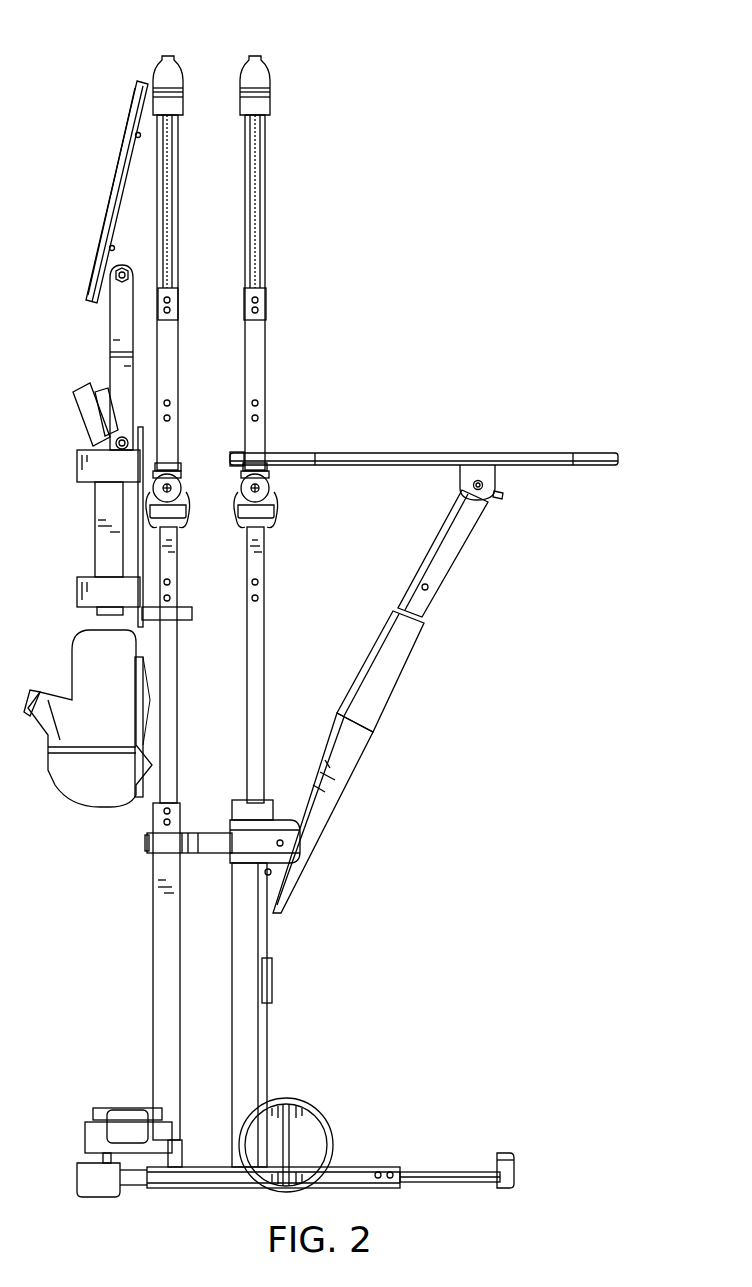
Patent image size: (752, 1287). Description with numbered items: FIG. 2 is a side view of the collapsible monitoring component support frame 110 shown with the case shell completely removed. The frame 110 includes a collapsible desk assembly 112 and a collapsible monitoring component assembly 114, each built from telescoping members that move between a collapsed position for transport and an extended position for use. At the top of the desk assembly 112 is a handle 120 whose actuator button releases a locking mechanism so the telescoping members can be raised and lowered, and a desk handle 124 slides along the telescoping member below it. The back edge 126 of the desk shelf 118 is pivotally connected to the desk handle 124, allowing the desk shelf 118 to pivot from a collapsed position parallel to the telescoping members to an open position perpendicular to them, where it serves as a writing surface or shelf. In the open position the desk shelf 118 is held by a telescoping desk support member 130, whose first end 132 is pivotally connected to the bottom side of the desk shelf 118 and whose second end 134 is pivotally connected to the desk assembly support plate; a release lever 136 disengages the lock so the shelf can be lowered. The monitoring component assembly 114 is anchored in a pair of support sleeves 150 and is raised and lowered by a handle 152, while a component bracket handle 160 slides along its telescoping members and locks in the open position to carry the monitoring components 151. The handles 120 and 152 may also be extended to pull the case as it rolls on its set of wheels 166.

The monitoring component support frame 110 is at (572, 341).
The collapsible desk assembly 112 is at (266, 353).
The collapsible monitoring component assembly 114 is at (156, 986).
The desk shelf 118 is at (442, 455).
The handle 120 is at (262, 57).
The desk handle 124 is at (288, 500).
The back edge 126 is at (230, 457).
The desk support member 130 is at (399, 674).
The first end 132 is at (460, 490).
The second end 134 is at (280, 912).
The release lever 136 is at (502, 498).
The support sleeves 150 is at (112, 185).
The monitoring components 151 is at (80, 790).
The handle 152 is at (168, 57).
The component bracket handle 160 is at (192, 510).
The wheels 166 is at (305, 1120).